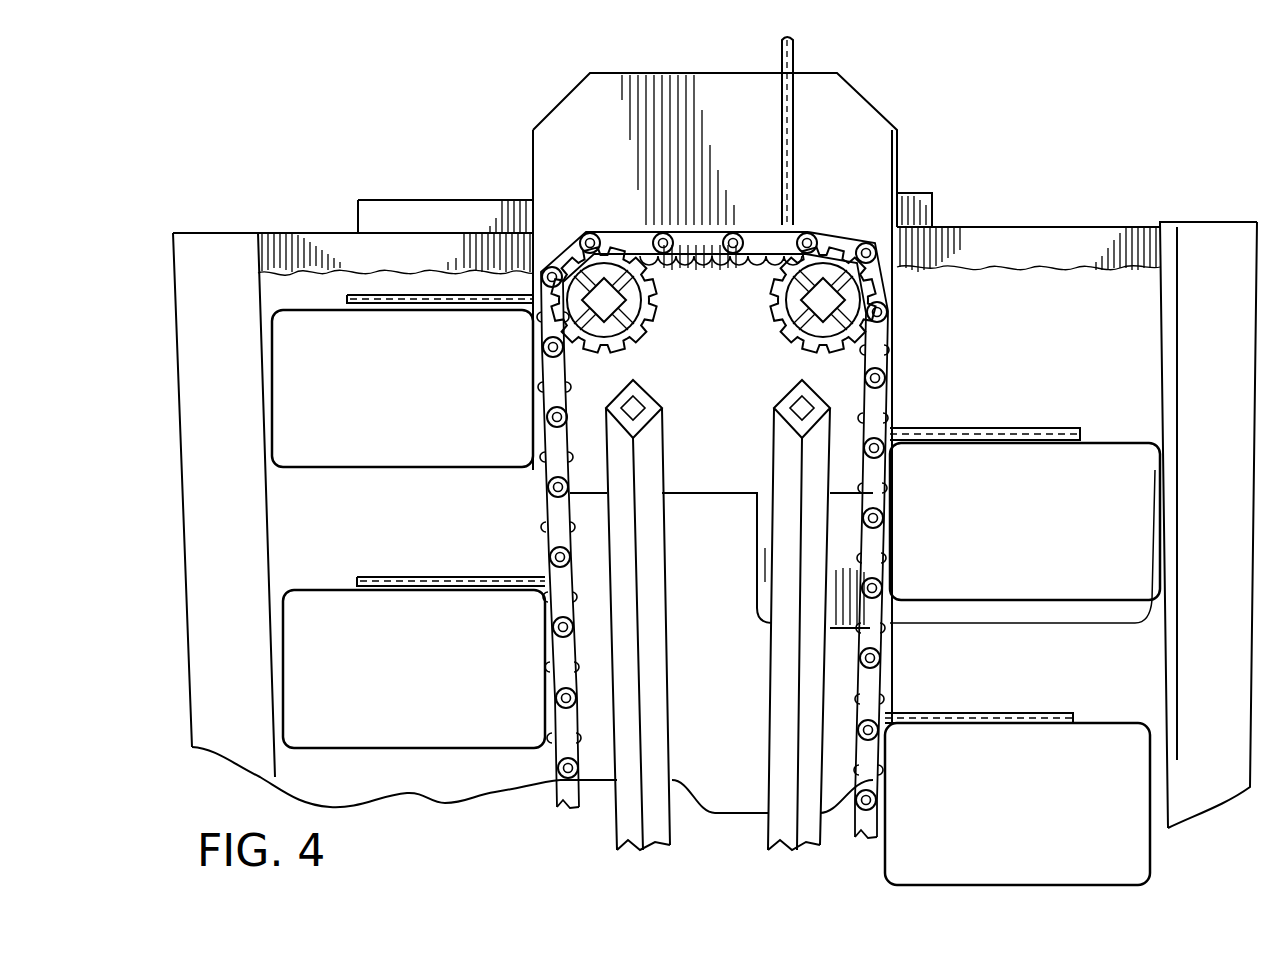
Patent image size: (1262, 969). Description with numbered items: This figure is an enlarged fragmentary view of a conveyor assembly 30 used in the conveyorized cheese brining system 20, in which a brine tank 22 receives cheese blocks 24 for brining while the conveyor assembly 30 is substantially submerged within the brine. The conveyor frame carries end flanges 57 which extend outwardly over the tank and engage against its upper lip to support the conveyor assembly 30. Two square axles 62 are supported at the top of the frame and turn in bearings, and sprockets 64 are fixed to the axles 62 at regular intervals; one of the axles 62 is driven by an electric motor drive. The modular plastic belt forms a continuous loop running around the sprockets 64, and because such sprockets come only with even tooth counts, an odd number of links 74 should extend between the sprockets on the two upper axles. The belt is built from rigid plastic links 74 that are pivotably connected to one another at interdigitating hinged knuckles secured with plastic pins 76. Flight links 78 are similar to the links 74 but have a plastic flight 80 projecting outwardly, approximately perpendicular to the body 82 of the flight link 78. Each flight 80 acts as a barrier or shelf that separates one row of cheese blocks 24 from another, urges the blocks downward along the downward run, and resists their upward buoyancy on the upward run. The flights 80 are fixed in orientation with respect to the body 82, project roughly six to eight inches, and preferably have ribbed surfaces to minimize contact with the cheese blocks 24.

The conveyorized cheese brining system 20 is at (332, 188).
The brine tank 22 is at (183, 552).
The cheese block 24 is at (418, 396).
The conveyor assembly 30 is at (572, 718).
The end flange 57 is at (453, 200).
The square axle 62 is at (790, 340).
The sprocket 64 is at (800, 362).
The link 74 is at (545, 470).
The plastic pin 76 is at (570, 558).
The flight link 78 is at (570, 593).
The flight 80 is at (793, 145).
The body 82 is at (560, 620).